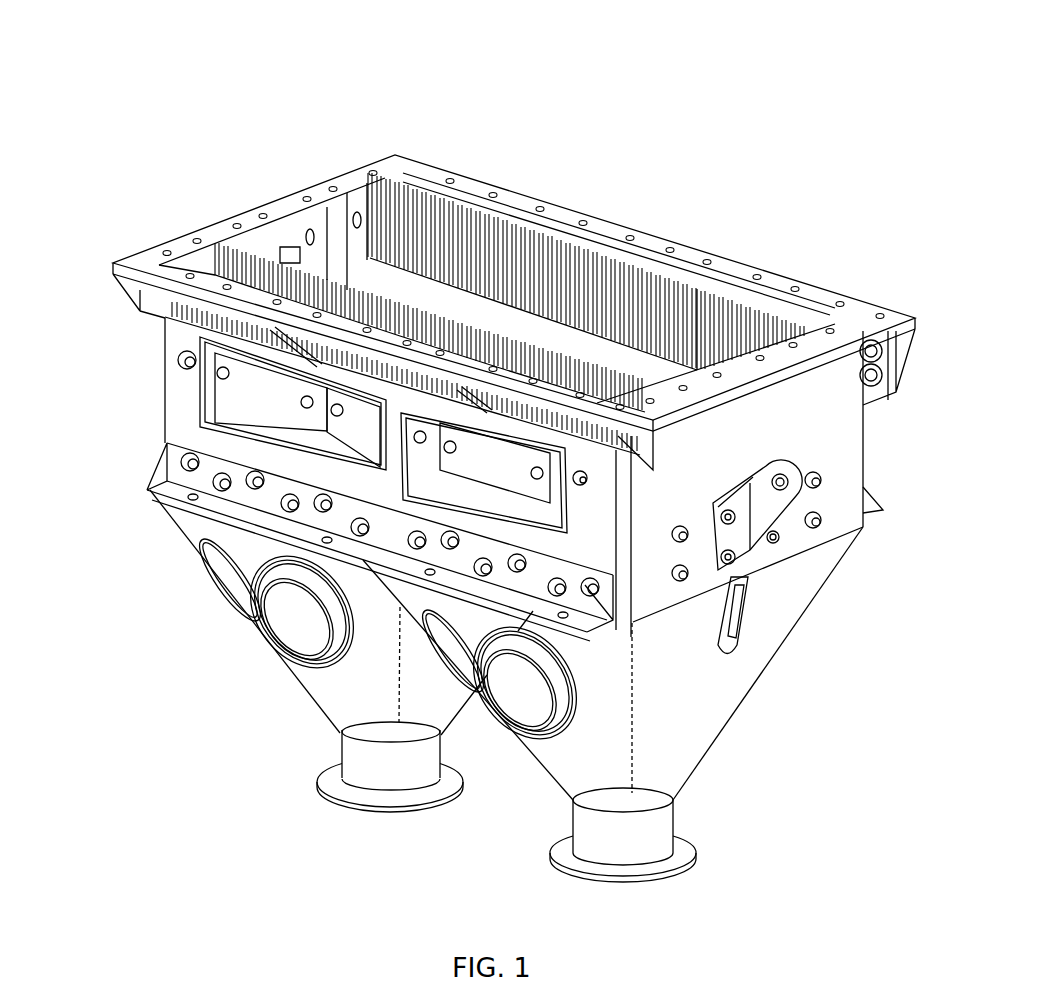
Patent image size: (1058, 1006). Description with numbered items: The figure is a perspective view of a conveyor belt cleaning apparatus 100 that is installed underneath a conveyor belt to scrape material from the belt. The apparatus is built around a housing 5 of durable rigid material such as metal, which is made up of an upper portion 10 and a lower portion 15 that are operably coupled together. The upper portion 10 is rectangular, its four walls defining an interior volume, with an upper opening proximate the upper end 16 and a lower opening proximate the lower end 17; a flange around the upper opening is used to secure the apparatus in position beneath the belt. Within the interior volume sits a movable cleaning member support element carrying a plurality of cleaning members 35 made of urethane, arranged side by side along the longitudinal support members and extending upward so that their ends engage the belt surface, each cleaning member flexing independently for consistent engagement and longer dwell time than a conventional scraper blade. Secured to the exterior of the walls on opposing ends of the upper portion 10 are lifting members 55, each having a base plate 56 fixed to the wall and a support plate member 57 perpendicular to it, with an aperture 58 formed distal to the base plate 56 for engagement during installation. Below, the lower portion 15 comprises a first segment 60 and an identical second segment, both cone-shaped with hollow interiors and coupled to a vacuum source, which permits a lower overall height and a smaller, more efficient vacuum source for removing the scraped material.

The conveyor belt cleaning apparatus 100 is at (714, 116).
The upper end 16 is at (95, 274).
The cleaning members 35 is at (490, 248).
The upper portion 10 is at (875, 462).
The housing 5 is at (905, 438).
The lower end 17 is at (127, 491).
The first segment 60 is at (292, 717).
The lower portion 15 is at (786, 688).
The aperture 58 is at (783, 490).
The support plate member 57 is at (773, 507).
The lifting members 55 is at (760, 510).
The base plate 56 is at (735, 537).